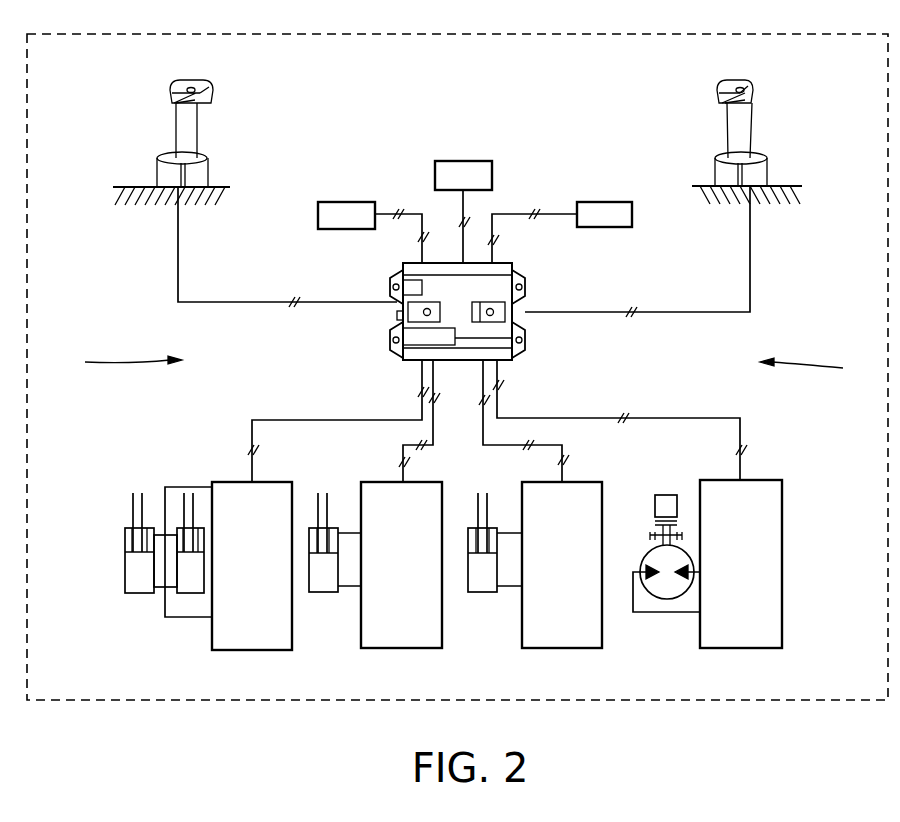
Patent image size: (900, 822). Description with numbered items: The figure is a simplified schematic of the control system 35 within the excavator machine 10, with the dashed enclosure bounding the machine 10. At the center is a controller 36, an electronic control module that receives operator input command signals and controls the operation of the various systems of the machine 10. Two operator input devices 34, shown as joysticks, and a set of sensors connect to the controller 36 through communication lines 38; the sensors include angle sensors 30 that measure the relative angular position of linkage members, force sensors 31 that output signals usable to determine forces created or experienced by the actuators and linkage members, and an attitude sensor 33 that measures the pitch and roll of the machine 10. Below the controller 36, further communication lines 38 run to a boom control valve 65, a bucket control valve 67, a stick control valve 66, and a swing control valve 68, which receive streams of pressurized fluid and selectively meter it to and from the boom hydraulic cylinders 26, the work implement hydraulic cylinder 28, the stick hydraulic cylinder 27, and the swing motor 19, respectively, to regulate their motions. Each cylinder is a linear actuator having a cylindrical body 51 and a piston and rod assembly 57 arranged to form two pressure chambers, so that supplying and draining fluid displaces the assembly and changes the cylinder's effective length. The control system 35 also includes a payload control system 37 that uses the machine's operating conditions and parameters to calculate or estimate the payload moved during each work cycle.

The machine 10 is at (681, 702).
The swing motor 19 is at (665, 592).
The boom hydraulic cylinders 26 is at (129, 560).
The stick hydraulic cylinder 27 is at (322, 592).
The work implement hydraulic cylinder 28 is at (482, 595).
The angle sensors 30 is at (350, 210).
The force sensors 31 is at (463, 175).
The attitude sensor 33 is at (600, 207).
The operator input devices 34 is at (180, 132).
The control system 35 is at (818, 365).
The controller 36 is at (518, 320).
The payload control system 37 is at (116, 357).
The communication lines 38 is at (556, 210).
The cylindrical body 51 is at (124, 557).
The piston and rod assembly 57 is at (135, 503).
The boom control valve 65 is at (240, 635).
The stick control valve 66 is at (558, 632).
The bucket control valve 67 is at (402, 633).
The swing control valve 68 is at (750, 638).